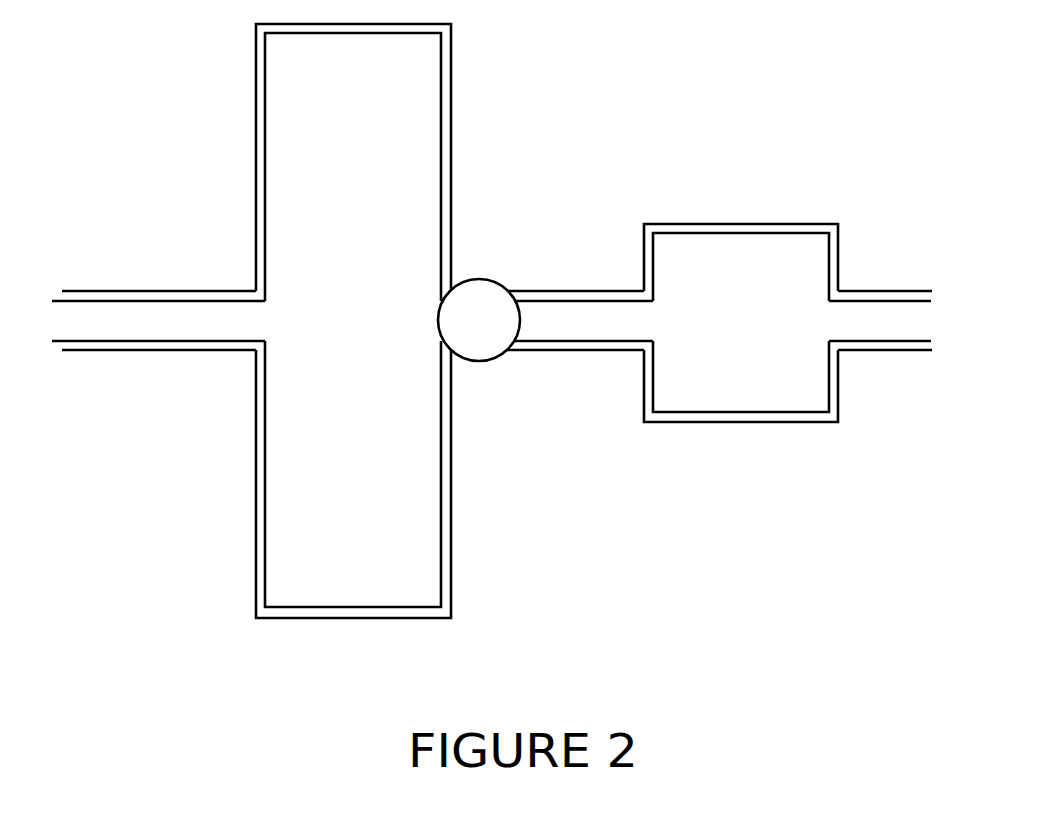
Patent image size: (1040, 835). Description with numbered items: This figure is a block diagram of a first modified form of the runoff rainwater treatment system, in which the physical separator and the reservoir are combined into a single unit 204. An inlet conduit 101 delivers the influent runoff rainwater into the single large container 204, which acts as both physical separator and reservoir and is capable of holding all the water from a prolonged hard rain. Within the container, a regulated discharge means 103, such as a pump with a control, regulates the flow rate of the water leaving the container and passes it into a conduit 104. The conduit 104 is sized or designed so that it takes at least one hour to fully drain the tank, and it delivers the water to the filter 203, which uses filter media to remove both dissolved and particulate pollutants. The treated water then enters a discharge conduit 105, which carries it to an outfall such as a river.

The inlet conduit 101 is at (70, 316).
The regulated discharge means 103 is at (497, 360).
The conduit 104 is at (656, 318).
The discharge conduit 105 is at (980, 322).
The filter 203 is at (741, 323).
The single large container 204 is at (353, 321).